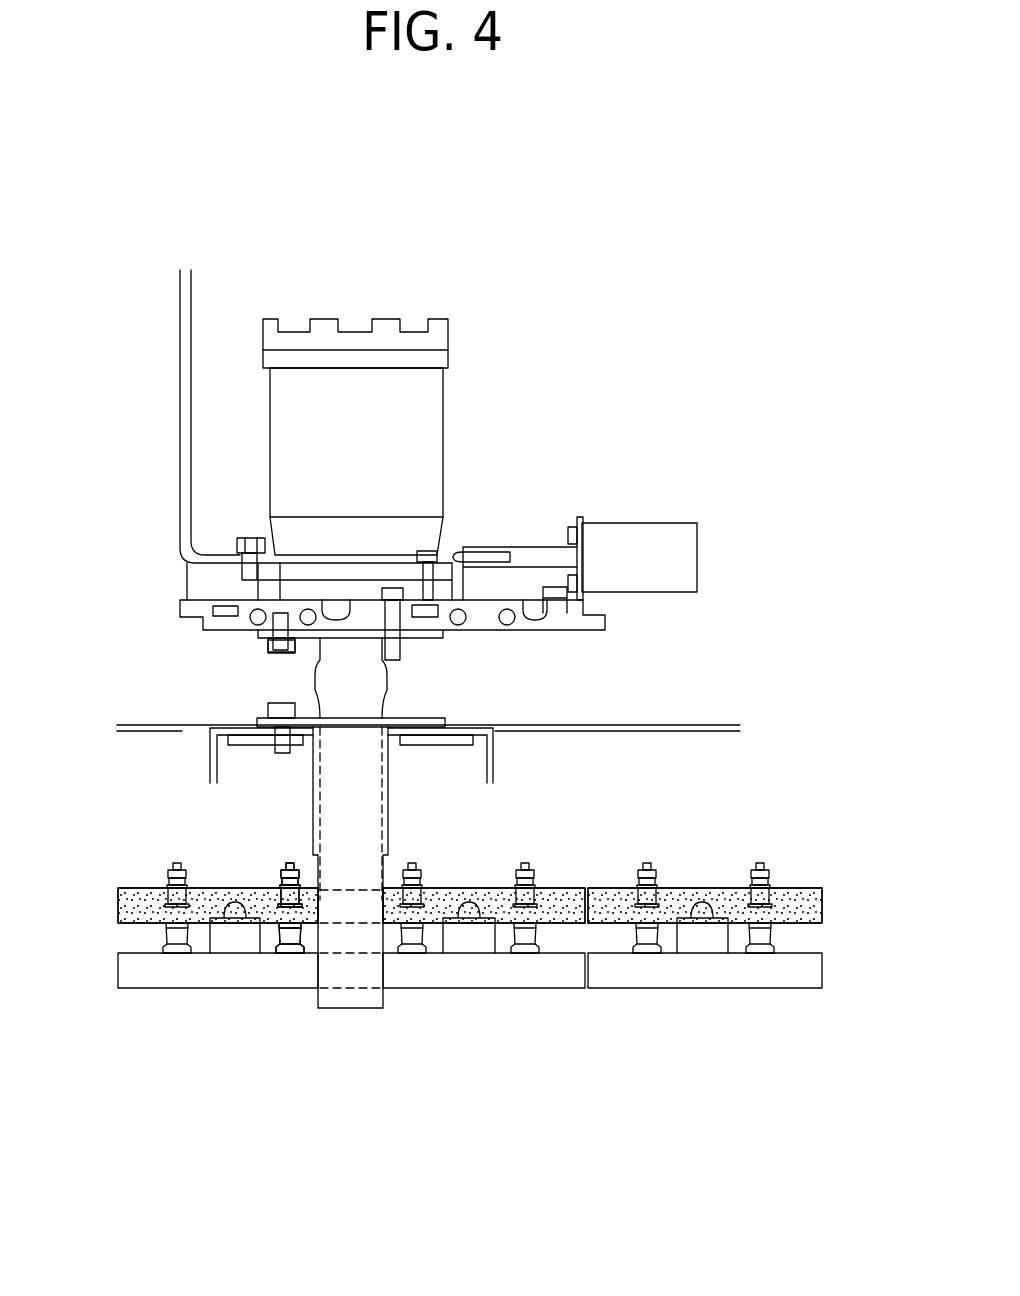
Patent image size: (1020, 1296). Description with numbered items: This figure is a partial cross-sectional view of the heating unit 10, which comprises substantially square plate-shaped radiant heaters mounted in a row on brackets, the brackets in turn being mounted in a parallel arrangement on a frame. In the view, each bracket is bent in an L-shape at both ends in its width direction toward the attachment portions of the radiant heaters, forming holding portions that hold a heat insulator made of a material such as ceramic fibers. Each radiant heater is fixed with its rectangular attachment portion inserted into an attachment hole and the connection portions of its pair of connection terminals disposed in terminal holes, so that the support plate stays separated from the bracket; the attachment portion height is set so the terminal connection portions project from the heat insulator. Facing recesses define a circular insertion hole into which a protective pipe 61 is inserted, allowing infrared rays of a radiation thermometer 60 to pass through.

The heating unit 10 is at (672, 288).
The radiation thermometer 60 is at (490, 434).
The protective pipe 61 is at (338, 998).